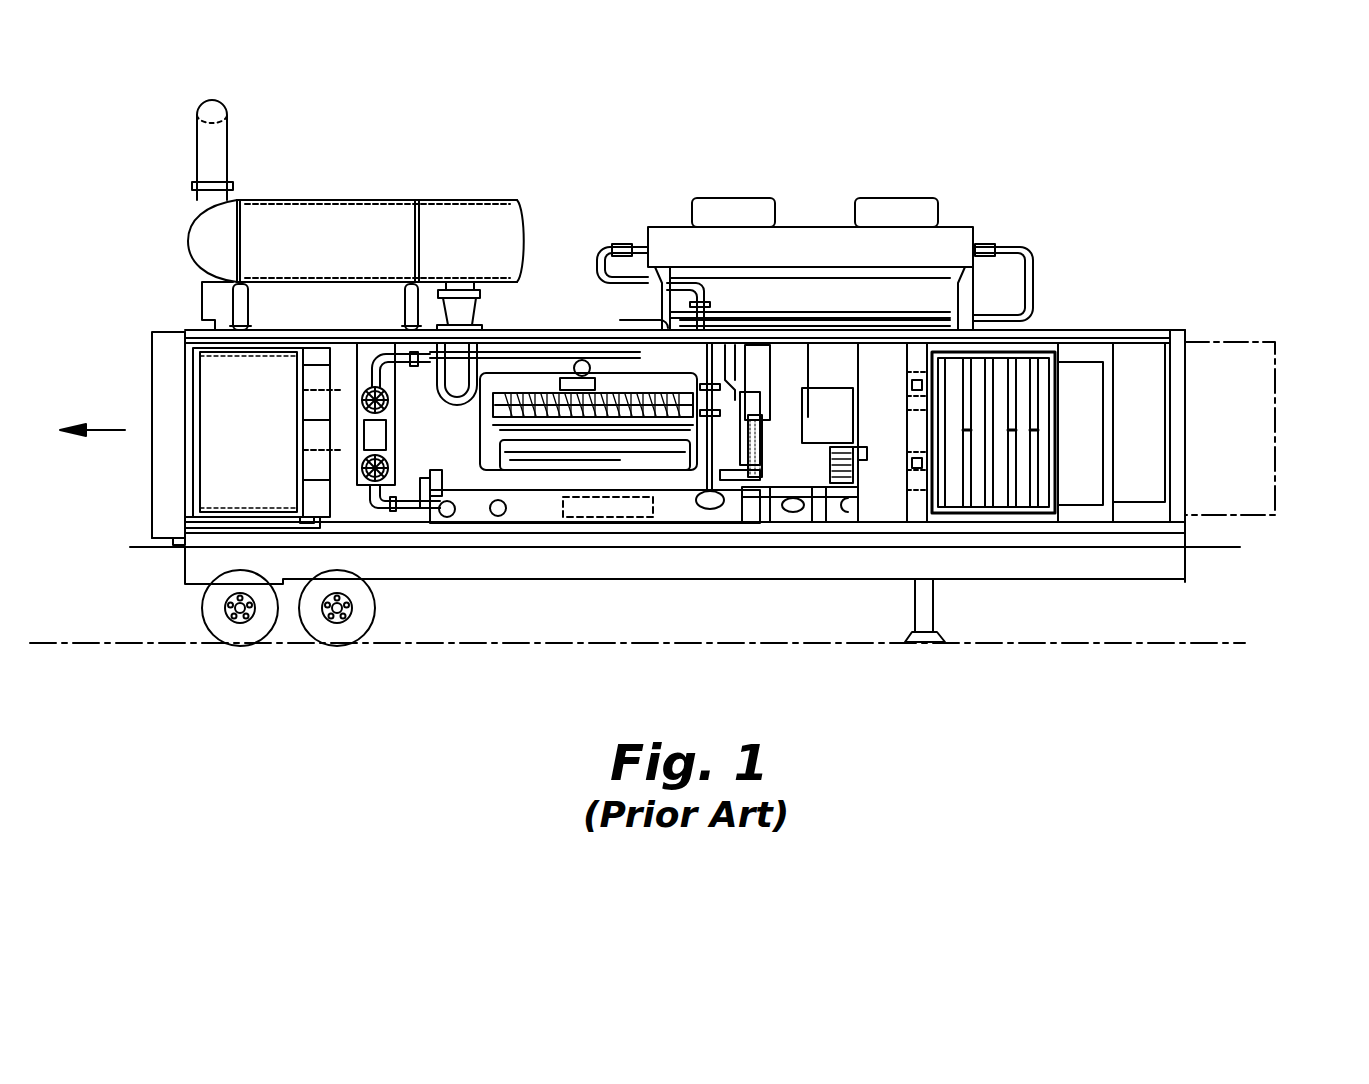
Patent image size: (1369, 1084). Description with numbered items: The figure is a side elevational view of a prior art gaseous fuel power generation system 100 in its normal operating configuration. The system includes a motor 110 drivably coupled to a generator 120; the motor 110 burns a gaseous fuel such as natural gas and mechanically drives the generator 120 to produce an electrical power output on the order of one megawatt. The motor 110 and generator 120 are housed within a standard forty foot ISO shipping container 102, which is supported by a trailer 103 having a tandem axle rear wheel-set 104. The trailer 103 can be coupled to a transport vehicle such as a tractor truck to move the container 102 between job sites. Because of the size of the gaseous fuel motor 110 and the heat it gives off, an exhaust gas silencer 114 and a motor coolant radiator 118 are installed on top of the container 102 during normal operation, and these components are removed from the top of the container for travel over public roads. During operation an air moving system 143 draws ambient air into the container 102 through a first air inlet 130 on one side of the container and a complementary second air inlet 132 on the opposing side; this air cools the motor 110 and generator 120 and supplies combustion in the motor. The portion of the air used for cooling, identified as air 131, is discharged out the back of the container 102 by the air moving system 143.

The power generation system 100 is at (1098, 250).
The shipping container 102 is at (1158, 328).
The trailer 103 is at (1222, 573).
The tandem axle rear wheel-set 104 is at (202, 615).
The motor 110 is at (620, 405).
The exhaust gas silencer 114 is at (372, 200).
The motor coolant radiator 118 is at (805, 227).
The generator 120 is at (795, 465).
The first air inlet 130 is at (1005, 495).
The air 131 is at (105, 430).
The second air inlet 132 is at (1010, 415).
The air moving system 143 is at (330, 470).